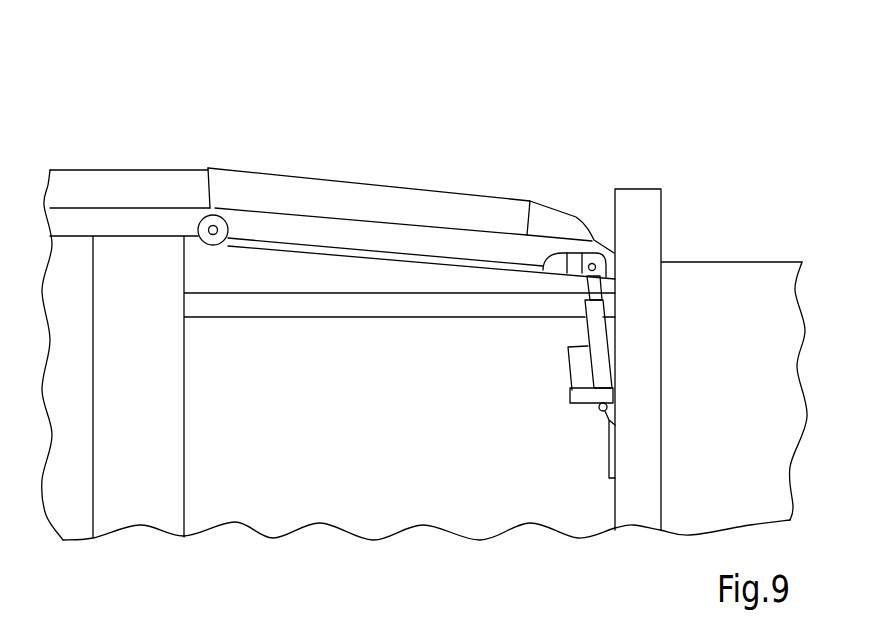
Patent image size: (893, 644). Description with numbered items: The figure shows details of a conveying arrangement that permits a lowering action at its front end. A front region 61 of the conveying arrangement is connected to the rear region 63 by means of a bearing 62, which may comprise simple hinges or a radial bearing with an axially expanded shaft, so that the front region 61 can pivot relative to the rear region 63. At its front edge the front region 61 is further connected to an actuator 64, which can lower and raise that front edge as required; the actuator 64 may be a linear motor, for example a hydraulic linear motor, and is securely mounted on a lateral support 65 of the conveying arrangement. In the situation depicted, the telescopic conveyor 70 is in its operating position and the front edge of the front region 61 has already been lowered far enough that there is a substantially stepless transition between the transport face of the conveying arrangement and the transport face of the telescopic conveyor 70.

The front region 61 is at (435, 164).
The bearing 62 is at (216, 243).
The rear region 63 is at (137, 149).
The actuator 64 is at (568, 373).
The lateral support 65 is at (630, 492).
The telescopic conveyor 70 is at (744, 295).